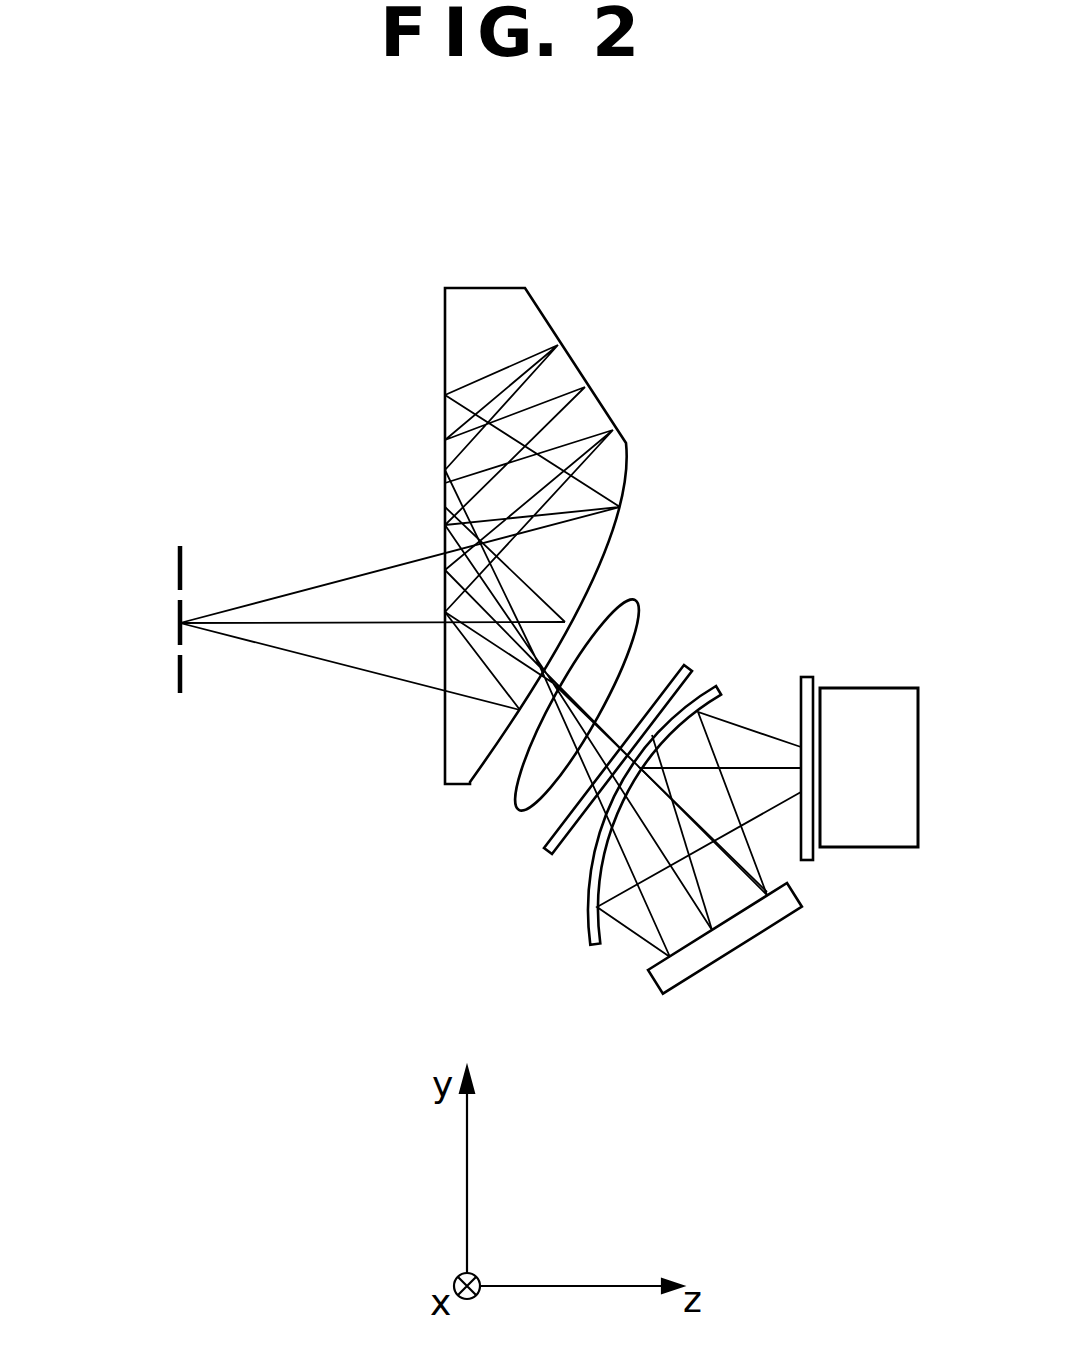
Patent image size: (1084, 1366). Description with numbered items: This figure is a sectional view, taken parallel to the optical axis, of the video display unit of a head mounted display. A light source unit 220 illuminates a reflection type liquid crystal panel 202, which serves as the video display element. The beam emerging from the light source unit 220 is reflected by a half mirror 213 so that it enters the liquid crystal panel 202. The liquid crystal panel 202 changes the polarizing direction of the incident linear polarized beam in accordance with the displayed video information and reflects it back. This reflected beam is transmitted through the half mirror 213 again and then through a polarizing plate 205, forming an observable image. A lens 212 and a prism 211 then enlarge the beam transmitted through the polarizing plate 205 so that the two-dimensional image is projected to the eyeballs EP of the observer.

The prism 211 is at (478, 287).
The lens 212 is at (508, 818).
The polarizing plate 205 is at (547, 850).
The half mirror 213 is at (585, 930).
The reflection type liquid crystal panel 202 is at (733, 953).
The light source unit 220 is at (875, 687).
The eyeballs EP is at (178, 568).